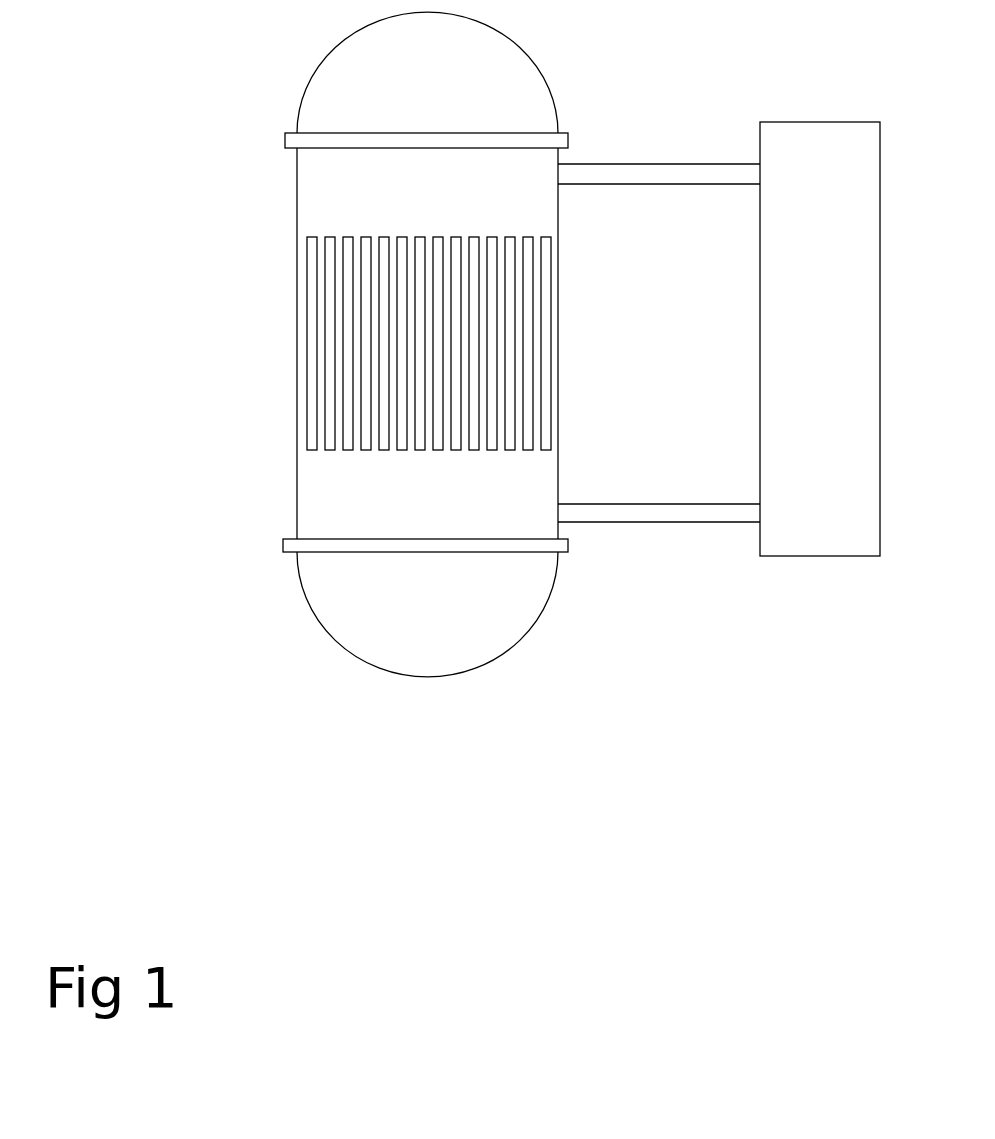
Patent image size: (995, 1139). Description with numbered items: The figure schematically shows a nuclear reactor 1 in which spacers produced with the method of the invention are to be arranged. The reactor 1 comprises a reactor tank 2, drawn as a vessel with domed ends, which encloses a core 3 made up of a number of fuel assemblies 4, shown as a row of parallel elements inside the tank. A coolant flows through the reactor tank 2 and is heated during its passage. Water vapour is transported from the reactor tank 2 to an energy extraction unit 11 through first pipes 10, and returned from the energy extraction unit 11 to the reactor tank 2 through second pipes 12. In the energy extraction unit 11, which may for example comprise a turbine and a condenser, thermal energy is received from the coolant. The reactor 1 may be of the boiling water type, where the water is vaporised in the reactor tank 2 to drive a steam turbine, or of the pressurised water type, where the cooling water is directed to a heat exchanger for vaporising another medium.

The reactor 1 is at (252, 95).
The reactor tank 2 is at (313, 203).
The core 3 is at (392, 343).
The fuel assemblies 4 is at (348, 408).
The first pipes 10 is at (637, 172).
The energy extraction unit 11 is at (856, 344).
The second pipes 12 is at (657, 512).